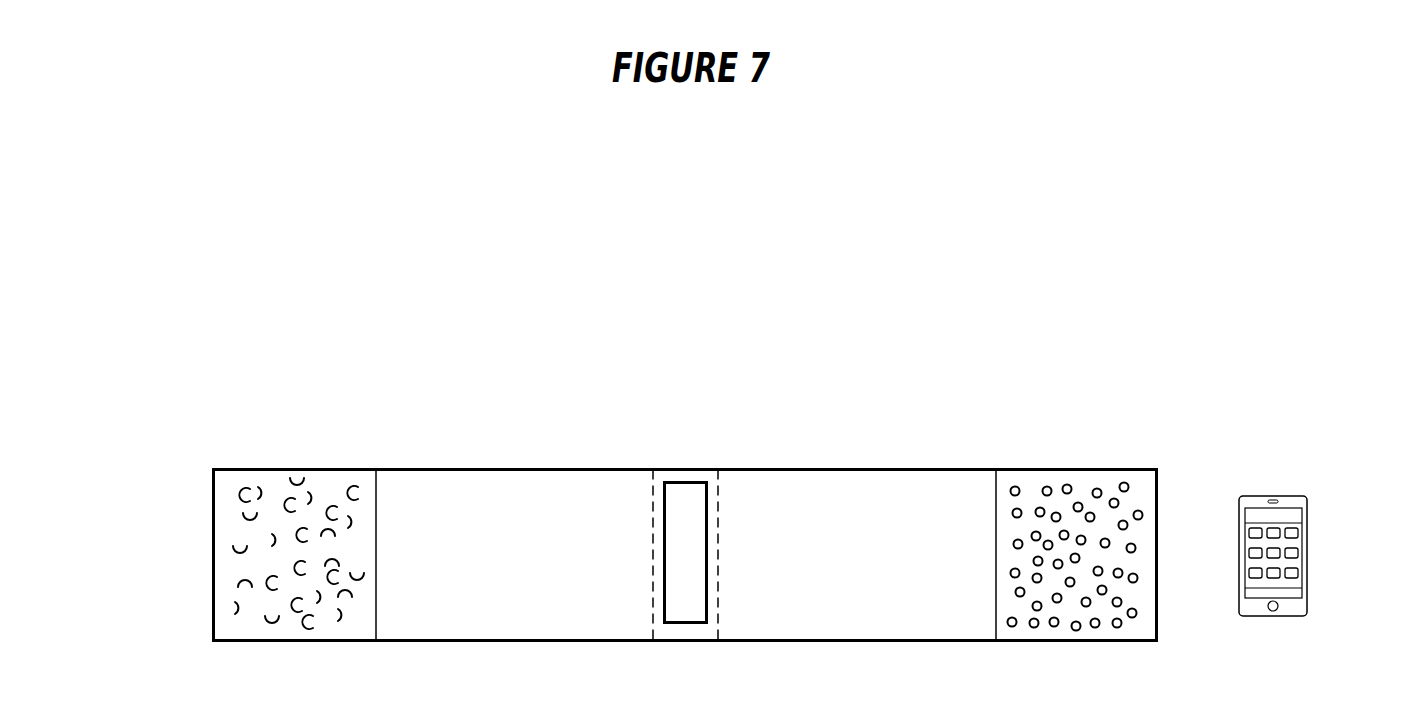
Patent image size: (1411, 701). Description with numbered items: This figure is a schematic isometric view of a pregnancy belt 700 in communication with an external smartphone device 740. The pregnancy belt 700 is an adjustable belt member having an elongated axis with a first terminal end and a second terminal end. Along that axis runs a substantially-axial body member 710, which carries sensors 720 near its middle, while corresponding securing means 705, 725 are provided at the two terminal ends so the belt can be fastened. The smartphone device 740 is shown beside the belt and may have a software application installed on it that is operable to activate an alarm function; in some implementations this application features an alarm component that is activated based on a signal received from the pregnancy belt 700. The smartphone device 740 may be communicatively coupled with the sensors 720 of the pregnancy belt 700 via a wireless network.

The pregnancy belt 700 is at (166, 344).
The securing means 705 is at (319, 468).
The substantially-axial body member 710 is at (518, 468).
The sensors 720 is at (687, 508).
The securing means 725 is at (1083, 468).
The smartphone device 740 is at (1307, 535).